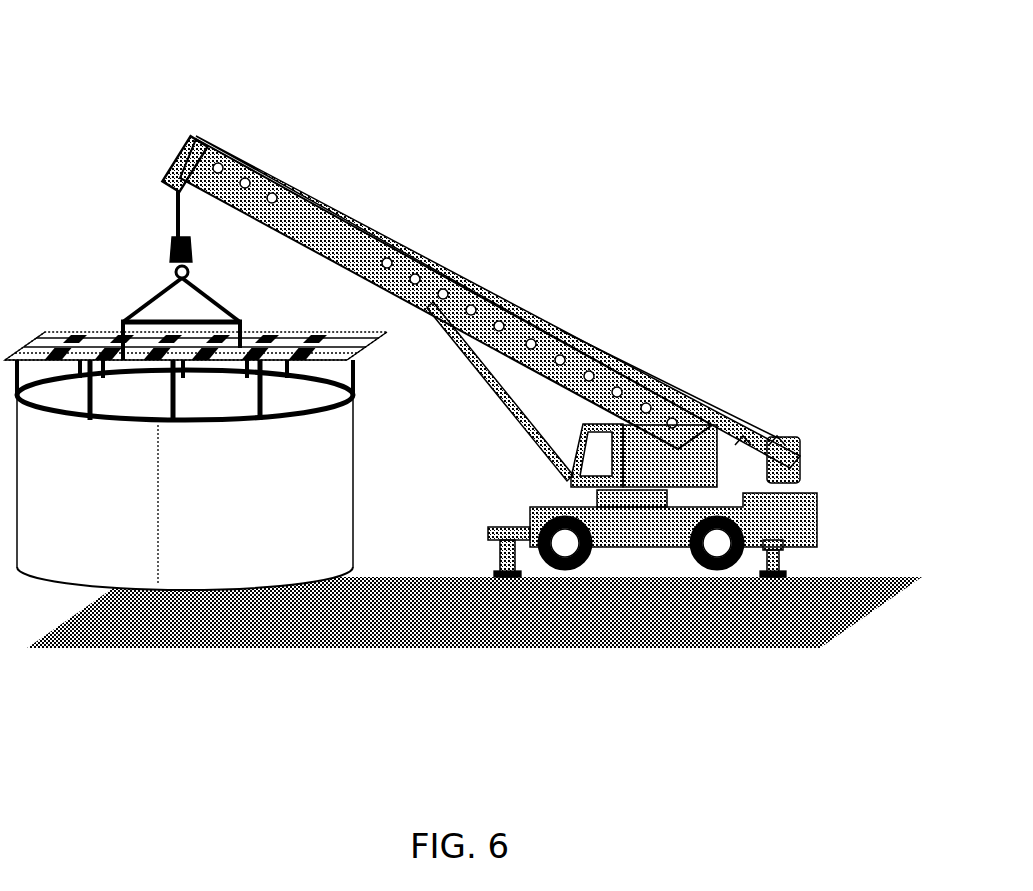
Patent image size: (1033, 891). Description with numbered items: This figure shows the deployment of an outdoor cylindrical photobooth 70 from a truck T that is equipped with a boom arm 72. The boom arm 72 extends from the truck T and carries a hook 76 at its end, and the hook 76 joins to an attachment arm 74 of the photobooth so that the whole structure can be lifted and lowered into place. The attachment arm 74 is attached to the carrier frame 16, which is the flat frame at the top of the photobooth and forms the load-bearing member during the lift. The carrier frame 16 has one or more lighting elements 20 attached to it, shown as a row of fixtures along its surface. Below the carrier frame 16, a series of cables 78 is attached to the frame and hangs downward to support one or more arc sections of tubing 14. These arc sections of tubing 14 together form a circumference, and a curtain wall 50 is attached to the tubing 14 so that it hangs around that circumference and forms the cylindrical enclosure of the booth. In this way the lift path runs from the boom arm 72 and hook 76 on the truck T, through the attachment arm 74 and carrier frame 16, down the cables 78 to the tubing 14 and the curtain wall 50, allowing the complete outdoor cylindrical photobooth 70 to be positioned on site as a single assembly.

The arc sections of tubing 14 is at (298, 417).
The carrier frame 16 is at (196, 191).
The lighting elements 20 is at (78, 336).
The curtain wall 50 is at (225, 488).
The outdoor cylindrical photobooth 70 is at (469, 295).
The boom arm 72 is at (303, 190).
The attachment arm 74 is at (213, 295).
The hook 76 is at (190, 267).
The cables 78 is at (97, 397).
The truck T is at (632, 432).